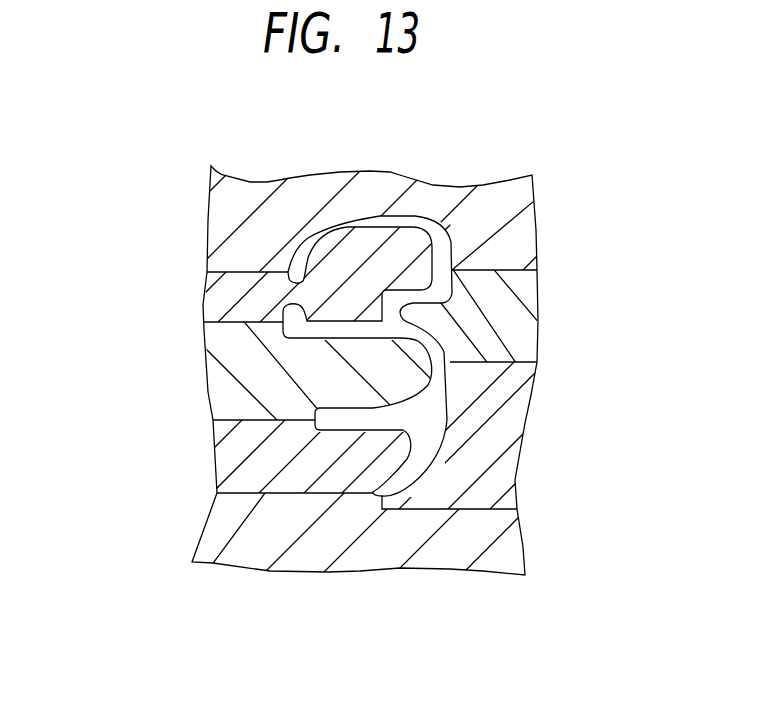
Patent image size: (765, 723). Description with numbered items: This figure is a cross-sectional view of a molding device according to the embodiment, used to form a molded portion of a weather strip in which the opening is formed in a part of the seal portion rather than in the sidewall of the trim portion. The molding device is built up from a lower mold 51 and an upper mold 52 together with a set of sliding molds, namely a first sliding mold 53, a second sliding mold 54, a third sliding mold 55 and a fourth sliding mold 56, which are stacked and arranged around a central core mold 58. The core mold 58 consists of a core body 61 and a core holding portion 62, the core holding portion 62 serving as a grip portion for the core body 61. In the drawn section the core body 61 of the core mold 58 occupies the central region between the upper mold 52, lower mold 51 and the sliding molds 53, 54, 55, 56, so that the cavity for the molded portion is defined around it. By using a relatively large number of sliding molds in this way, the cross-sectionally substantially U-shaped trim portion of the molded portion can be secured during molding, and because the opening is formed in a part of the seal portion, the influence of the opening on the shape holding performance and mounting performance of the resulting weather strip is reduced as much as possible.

The lower mold 51 is at (355, 569).
The upper mold 52 is at (398, 174).
The first sliding mold 53 is at (527, 328).
The second sliding mold 54 is at (527, 427).
The third sliding mold 55 is at (232, 460).
The fourth sliding mold 56 is at (208, 395).
The core mold 58 is at (324, 316).
The core body 61 is at (402, 233).
The core holding portion 62 is at (203, 305).